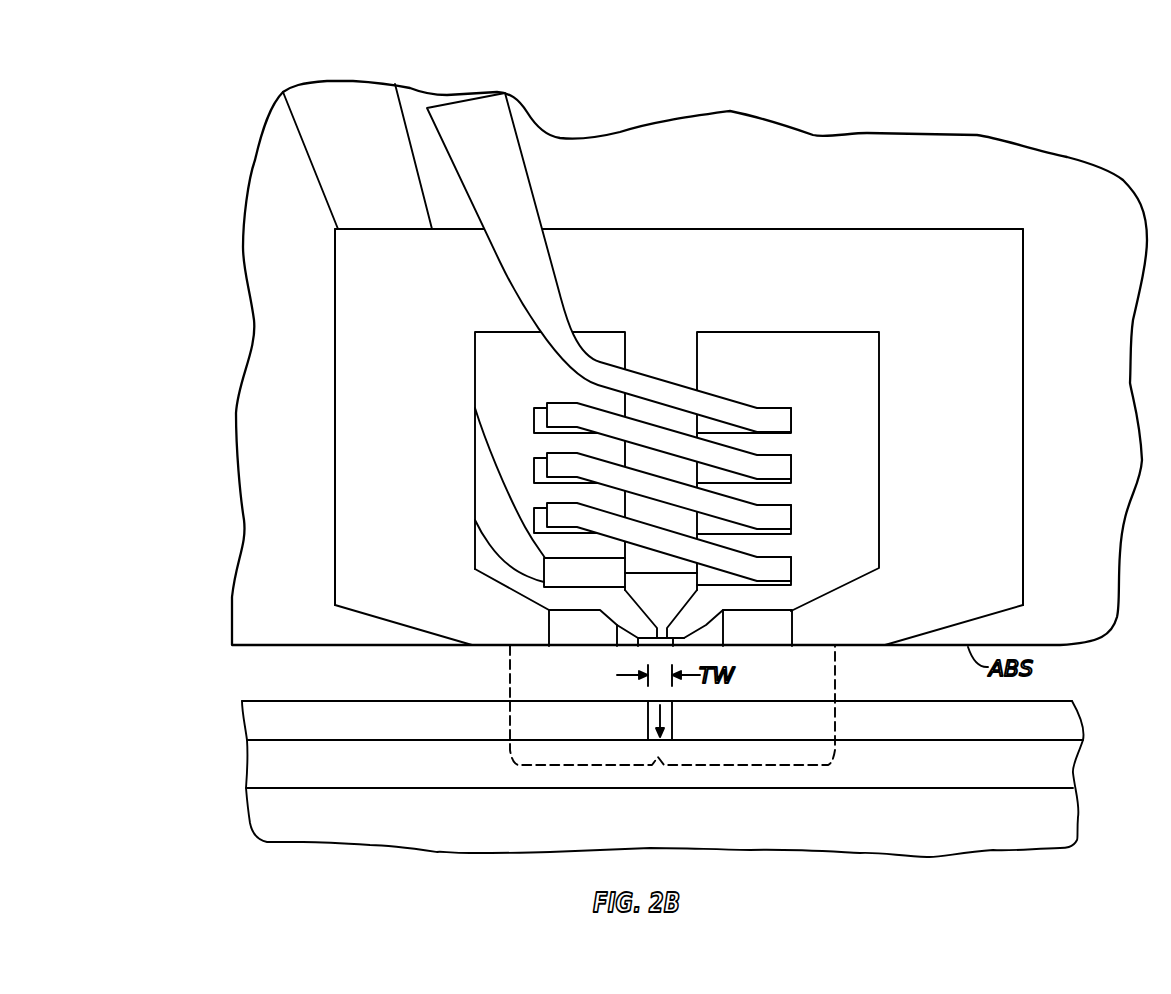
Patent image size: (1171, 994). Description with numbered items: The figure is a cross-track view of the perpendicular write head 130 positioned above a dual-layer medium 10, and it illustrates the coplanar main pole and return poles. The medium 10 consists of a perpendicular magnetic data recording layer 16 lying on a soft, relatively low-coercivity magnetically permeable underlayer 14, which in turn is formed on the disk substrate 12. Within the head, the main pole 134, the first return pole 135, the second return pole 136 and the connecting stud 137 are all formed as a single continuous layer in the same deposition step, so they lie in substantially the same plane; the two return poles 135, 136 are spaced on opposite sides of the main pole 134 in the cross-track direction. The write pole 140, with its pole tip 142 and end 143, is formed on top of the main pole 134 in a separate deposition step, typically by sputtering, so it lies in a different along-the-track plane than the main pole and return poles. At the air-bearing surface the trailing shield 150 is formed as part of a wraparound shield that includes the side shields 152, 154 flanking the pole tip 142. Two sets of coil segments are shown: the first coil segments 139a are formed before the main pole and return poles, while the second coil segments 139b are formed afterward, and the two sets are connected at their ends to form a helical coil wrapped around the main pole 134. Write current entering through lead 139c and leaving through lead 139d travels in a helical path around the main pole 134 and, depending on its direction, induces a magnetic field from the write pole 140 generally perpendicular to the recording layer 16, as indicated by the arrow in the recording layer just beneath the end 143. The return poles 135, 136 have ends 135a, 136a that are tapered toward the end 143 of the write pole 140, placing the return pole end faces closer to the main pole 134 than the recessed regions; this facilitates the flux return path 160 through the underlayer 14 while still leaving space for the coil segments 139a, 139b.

The medium 10 is at (1024, 868).
The disk substrate 12 is at (255, 815).
The soft underlayer 14 is at (255, 767).
The recording layer 16 is at (255, 722).
The write head 130 is at (875, 117).
The main pole 134 is at (678, 370).
The first return pole 135 is at (353, 378).
The first return pole end 135a is at (497, 648).
The second return pole 136 is at (1008, 390).
The second return pole end 136a is at (857, 647).
The connecting stud 137 is at (730, 240).
The first coil segments 139a is at (542, 413).
The second coil segments 139b is at (750, 408).
The lead 139c is at (313, 95).
The lead 139d is at (480, 112).
The write pole 140 is at (672, 587).
The pole tip 142 is at (667, 627).
The end 143 is at (658, 648).
The trailing shield 150 is at (638, 647).
The side shield 152 is at (783, 633).
The side shield 154 is at (560, 633).
The flux return path 160 is at (510, 752).